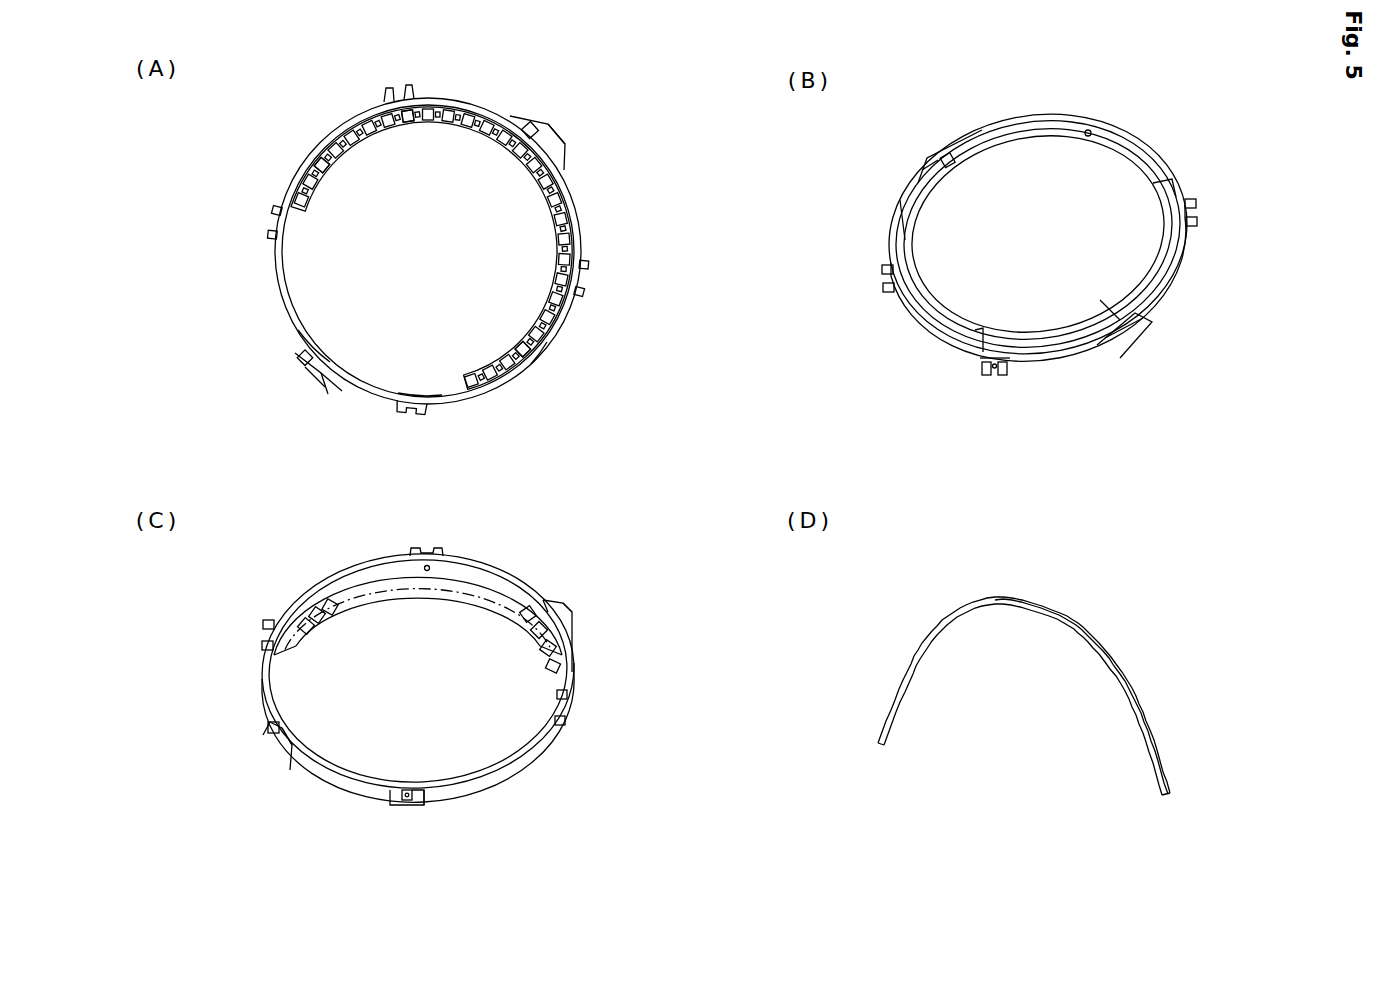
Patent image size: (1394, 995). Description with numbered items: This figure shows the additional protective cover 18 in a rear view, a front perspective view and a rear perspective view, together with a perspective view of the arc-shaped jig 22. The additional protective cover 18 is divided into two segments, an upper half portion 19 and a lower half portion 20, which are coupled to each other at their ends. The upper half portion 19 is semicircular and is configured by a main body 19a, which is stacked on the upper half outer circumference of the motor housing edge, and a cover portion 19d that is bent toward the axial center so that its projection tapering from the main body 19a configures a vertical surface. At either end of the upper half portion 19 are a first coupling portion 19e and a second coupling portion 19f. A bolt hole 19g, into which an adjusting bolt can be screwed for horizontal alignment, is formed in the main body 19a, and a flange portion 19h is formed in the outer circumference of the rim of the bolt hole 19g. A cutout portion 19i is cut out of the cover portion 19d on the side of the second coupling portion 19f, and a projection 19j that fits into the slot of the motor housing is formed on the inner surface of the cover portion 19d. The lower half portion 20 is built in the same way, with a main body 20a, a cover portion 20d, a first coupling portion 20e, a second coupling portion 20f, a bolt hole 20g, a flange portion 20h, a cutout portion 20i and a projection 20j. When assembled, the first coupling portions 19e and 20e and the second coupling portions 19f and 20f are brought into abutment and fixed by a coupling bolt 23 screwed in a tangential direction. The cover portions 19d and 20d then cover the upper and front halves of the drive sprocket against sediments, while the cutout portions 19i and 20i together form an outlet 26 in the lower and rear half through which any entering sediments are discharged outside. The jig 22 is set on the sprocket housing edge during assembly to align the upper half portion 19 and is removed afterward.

The additional protective cover 18 is at (340, 105).
The upper half portion 19 is at (300, 165).
The main body 19a is at (452, 95).
The cover portion 19d is at (400, 125).
The first coupling portion 19e is at (520, 115).
The second coupling portion 19f is at (310, 367).
The bolt hole 19g is at (1092, 130).
The flange portion 19h is at (440, 548).
The cutout portion 19i is at (1160, 252).
The projection 19j is at (325, 172).
The lower half portion 20 is at (513, 392).
The main body 20a is at (950, 353).
The cover portion 20d is at (556, 352).
The first coupling portion 20e is at (567, 142).
The second coupling portion 20f is at (325, 382).
The bolt hole 20g is at (990, 375).
The flange portion 20h is at (593, 268).
The cutout portion 20i is at (418, 400).
The projection 20j is at (546, 346).
The jig 22 is at (1080, 625).
The coupling bolt 23 is at (540, 128).
The outlet 26 is at (335, 350).